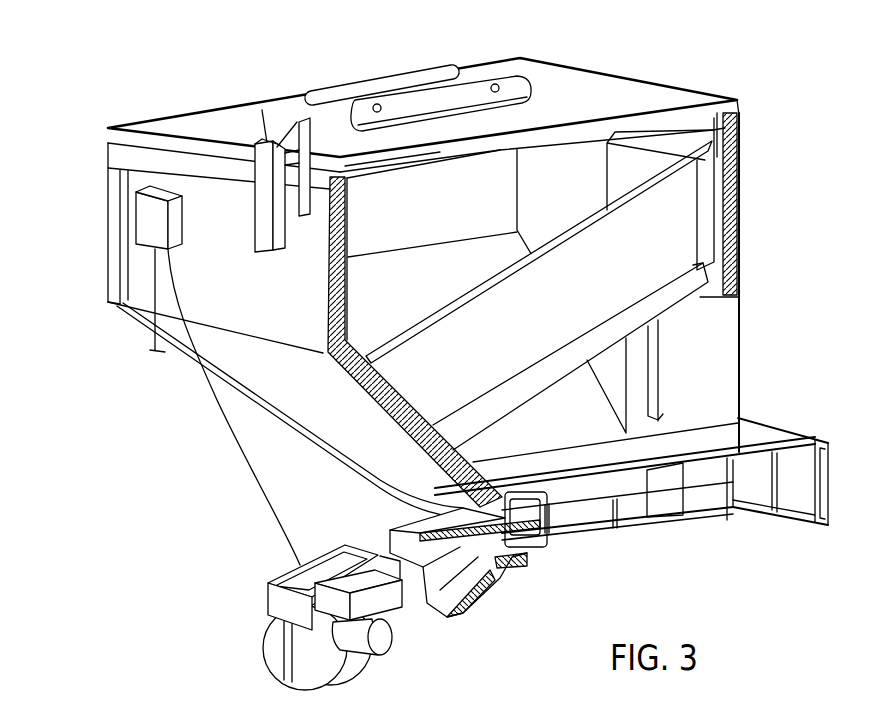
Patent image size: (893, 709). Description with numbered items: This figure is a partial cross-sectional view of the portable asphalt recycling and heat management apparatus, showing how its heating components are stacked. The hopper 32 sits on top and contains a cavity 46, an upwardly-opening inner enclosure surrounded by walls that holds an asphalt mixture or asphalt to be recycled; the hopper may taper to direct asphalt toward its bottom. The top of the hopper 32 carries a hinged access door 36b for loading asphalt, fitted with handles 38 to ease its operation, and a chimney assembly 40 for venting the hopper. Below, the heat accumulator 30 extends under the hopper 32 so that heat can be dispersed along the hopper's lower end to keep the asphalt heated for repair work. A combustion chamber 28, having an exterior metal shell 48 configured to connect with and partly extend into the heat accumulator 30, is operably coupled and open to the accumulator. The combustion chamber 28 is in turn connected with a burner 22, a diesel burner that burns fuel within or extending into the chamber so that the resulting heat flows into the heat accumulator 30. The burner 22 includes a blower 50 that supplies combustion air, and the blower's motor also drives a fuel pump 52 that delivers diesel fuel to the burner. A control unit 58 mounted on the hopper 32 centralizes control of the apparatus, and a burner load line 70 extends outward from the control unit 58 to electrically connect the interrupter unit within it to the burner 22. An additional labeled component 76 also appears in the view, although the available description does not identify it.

The burner 22 is at (277, 602).
The combustion chamber 28 is at (460, 588).
The heat accumulator 30 is at (592, 520).
The hopper 32 is at (723, 313).
The access door 36b is at (580, 84).
The handles 38 is at (343, 85).
The chimney assembly 40 is at (260, 163).
The cavity 46 is at (588, 410).
The exterior metal shell 48 is at (497, 513).
The blower 50 is at (388, 642).
The fuel pump 52 is at (267, 652).
The control unit 58 is at (150, 217).
The burner load line 70 is at (212, 402).
The cable 76 is at (152, 345).